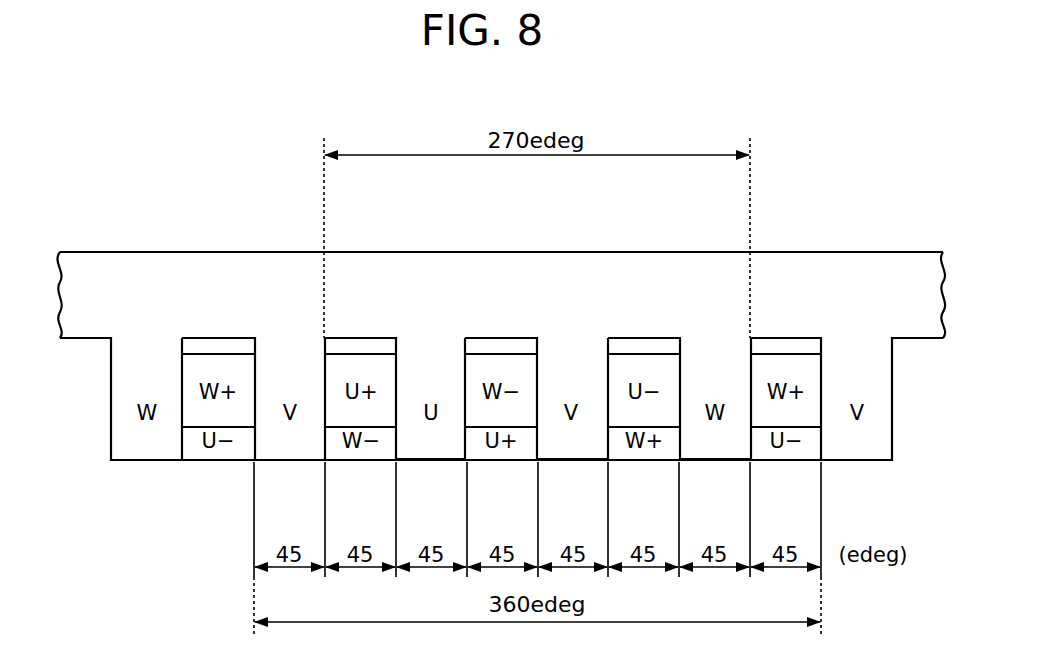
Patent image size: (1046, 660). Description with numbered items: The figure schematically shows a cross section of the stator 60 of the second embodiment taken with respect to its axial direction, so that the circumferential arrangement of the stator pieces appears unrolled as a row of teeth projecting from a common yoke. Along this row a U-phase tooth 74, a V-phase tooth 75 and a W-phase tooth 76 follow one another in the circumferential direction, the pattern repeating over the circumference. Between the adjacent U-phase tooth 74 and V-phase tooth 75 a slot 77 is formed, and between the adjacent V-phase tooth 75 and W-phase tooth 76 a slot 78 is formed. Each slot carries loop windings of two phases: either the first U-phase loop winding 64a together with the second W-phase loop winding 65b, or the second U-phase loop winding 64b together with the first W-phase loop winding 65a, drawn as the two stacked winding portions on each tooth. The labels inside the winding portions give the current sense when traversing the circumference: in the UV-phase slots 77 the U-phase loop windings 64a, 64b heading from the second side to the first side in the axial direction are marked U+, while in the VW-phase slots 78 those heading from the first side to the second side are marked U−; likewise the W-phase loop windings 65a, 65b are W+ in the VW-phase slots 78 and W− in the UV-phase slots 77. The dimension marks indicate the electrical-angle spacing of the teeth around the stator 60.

The stator 60 is at (894, 228).
The first U-phase loop winding 64a is at (376, 362).
The second U-phase loop winding 64b is at (528, 442).
The first W-phase loop winding 65a is at (520, 364).
The second W-phase loop winding 65b is at (388, 437).
The U-phase tooth 74 is at (426, 457).
The V-phase tooth 75 is at (568, 457).
The W-phase tooth 76 is at (712, 457).
The slot 77 is at (500, 348).
The slot 78 is at (648, 346).